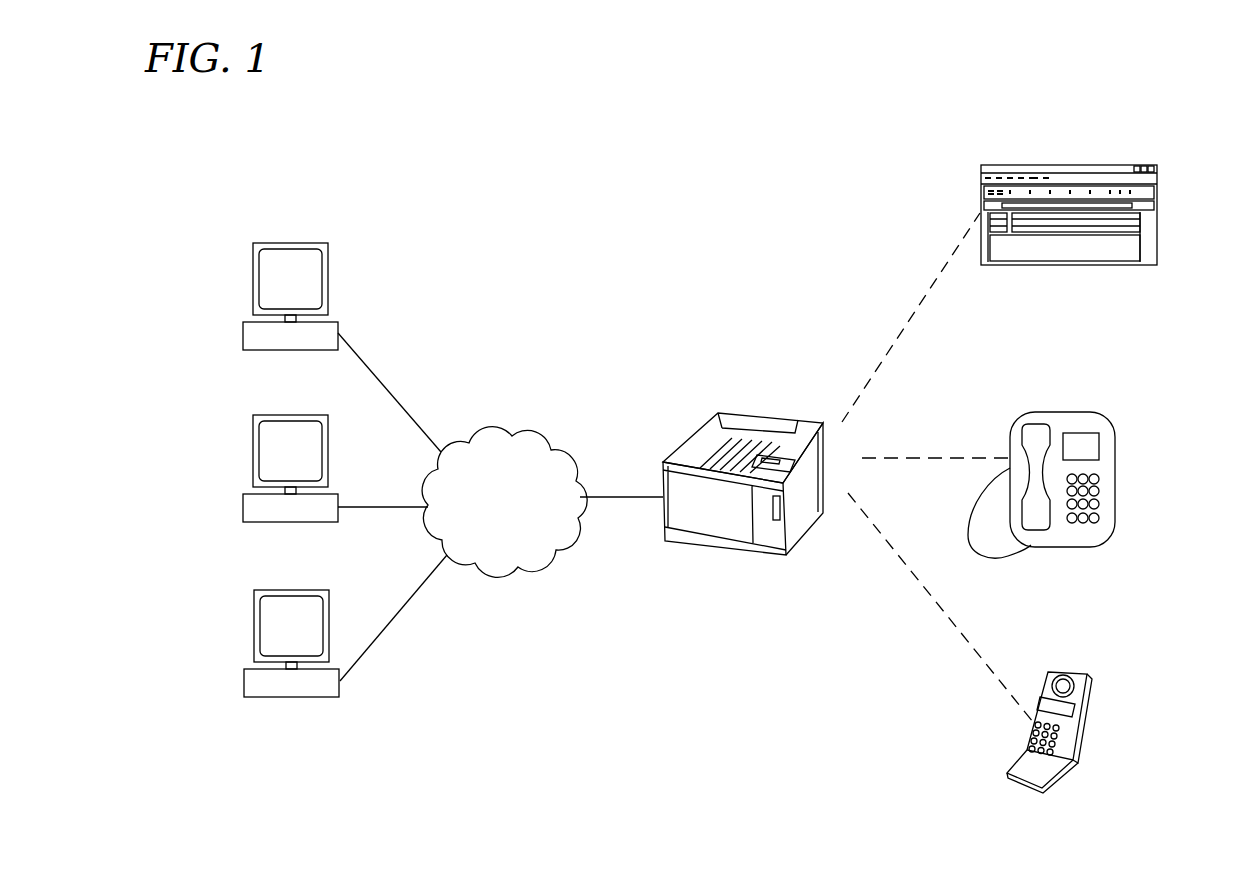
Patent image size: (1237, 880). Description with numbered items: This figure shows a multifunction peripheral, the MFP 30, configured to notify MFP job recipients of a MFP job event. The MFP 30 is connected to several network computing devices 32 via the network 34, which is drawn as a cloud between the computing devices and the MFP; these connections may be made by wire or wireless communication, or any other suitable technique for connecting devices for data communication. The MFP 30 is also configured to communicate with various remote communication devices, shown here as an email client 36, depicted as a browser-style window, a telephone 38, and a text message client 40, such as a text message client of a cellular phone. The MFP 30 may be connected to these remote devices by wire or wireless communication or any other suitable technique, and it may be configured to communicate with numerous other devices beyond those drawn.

The MFP 30 is at (762, 412).
The network computing devices 32 is at (253, 280).
The network 34 is at (541, 436).
The email client 36 is at (981, 182).
The telephone 38 is at (1115, 461).
The text message client 40 is at (1076, 720).